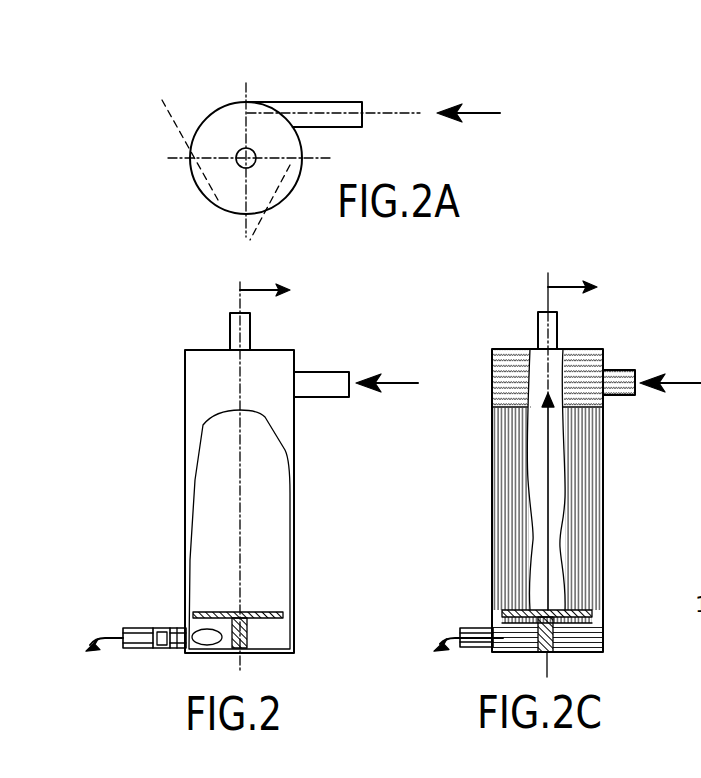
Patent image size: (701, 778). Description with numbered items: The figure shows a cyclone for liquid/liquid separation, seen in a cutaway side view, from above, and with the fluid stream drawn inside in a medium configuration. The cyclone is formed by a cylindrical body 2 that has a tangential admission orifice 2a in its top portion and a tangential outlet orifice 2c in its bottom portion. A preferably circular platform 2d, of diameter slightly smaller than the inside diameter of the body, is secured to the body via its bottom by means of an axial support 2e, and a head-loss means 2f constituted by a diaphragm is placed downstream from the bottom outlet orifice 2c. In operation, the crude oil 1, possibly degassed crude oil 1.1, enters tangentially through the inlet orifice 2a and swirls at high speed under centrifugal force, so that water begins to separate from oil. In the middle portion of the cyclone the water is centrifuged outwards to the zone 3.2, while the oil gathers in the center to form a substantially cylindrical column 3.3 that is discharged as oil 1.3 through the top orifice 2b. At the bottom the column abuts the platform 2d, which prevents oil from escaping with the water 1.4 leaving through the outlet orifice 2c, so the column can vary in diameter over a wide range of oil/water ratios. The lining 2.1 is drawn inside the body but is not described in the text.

In FIG. 2A, the crude oil 1 is at (485, 130).
In FIG. 2, the crude oil 1 is at (389, 361).
In FIG. 2C, the crude oil 1 is at (670, 361).
In FIG. 2A, the degassed crude oil 1.1 is at (477, 117).
In FIG. 2, the degassed crude oil 1.1 is at (398, 378).
In FIG. 2C, the degassed crude oil 1.1 is at (683, 378).
In FIG. 2, the oil 1.3 is at (253, 290).
In FIG. 2C, the oil 1.3 is at (570, 287).
In FIG. 2C, the water 1.4 is at (447, 633).
In FIG. 2, the cylindrical body 2 is at (115, 353).
In FIG. 2, the separation chamber liner 2.1 is at (185, 423).
In FIG. 2A, the tangential admission orifice 2a is at (323, 128).
In FIG. 2, the tangential admission orifice 2a is at (327, 372).
In FIG. 2C, the tangential admission orifice 2a is at (630, 370).
In FIG. 2, the top orifice 2b is at (230, 325).
In FIG. 2C, the top orifice 2b is at (538, 325).
In FIG. 2, the tangential outlet orifice 2c is at (132, 650).
In FIG. 2C, the tangential outlet orifice 2c is at (472, 648).
In FIG. 2, the platform 2d is at (257, 612).
In FIG. 2, the axial support 2e is at (250, 633).
In FIG. 2, the head-loss means 2f is at (162, 627).
In FIG. 2C, the outward water zone 3.2 is at (583, 467).
In FIG. 2C, the cylindrical column of oil 3.3 is at (552, 518).